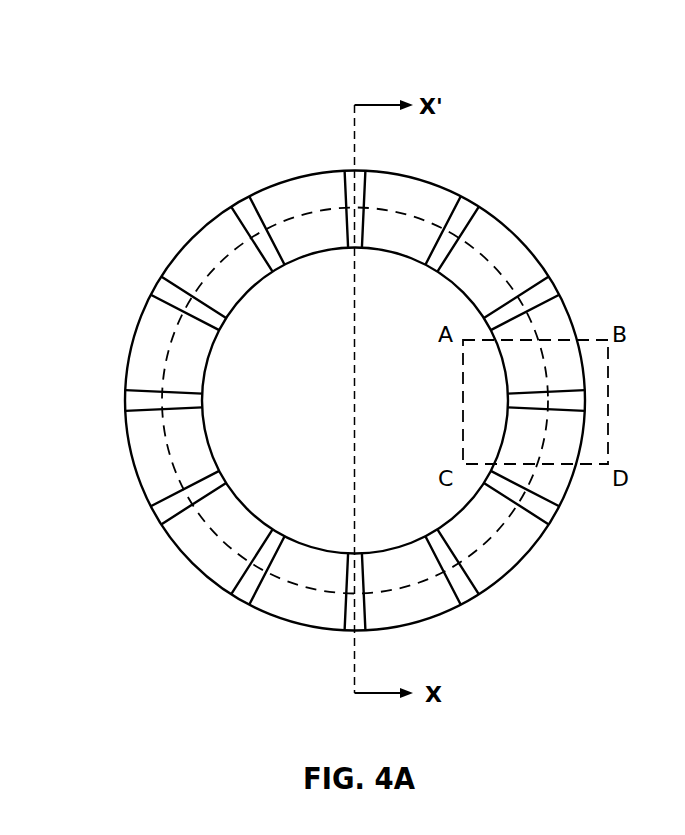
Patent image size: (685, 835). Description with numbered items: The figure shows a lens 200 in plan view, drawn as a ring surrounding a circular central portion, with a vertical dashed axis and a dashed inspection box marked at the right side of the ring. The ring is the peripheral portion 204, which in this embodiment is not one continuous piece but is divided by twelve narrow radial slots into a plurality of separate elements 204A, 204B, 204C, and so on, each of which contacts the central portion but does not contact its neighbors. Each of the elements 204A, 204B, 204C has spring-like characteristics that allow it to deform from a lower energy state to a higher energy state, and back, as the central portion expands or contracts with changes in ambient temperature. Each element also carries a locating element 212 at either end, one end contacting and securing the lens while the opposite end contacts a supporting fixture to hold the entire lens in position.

The lens 200 is at (212, 62).
The peripheral portion 204 is at (495, 233).
The locating element 212 is at (572, 308).
The element 204A is at (547, 493).
The element 204B is at (470, 597).
The element 204C is at (343, 610).